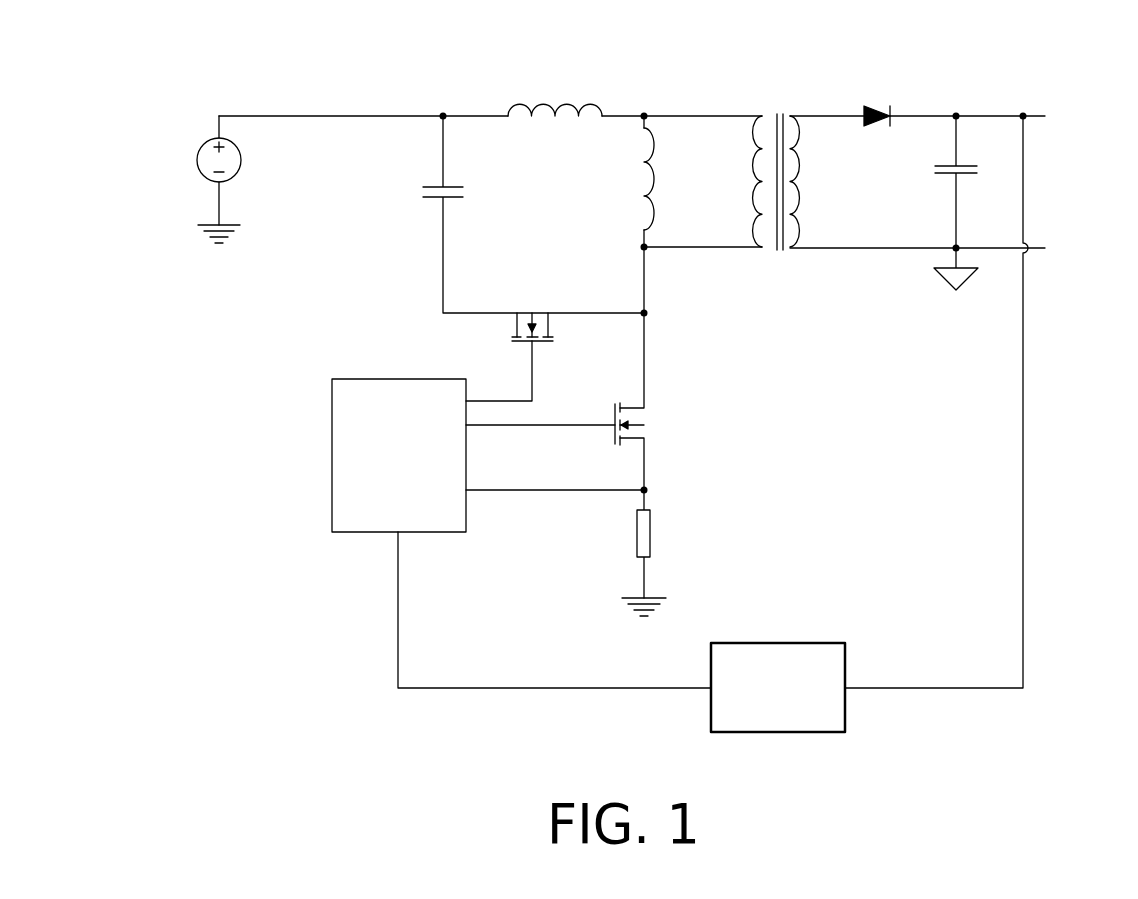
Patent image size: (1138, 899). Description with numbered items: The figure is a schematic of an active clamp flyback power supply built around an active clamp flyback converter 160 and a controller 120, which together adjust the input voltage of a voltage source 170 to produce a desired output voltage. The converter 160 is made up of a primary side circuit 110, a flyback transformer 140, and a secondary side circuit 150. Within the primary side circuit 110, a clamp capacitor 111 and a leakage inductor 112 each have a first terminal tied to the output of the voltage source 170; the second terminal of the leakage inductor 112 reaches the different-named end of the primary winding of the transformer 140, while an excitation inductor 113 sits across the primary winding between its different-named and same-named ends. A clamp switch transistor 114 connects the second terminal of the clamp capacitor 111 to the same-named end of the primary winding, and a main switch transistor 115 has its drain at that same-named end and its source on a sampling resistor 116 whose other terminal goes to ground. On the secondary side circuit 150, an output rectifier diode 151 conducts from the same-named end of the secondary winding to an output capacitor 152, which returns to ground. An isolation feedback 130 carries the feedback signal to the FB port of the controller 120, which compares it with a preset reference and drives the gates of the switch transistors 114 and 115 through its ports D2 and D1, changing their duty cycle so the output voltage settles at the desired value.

The primary side circuit 110 is at (466, 95).
The clamp capacitor 111 is at (432, 183).
The leakage inductor 112 is at (572, 98).
The excitation inductor 113 is at (640, 180).
The clamp switch transistor 114 is at (537, 305).
The main switch transistor 115 is at (632, 400).
The sampling resistor 116 is at (654, 505).
The controller 120 is at (372, 378).
The isolation feedback 130 is at (776, 643).
The flyback transformer 140 is at (782, 112).
The secondary side circuit 150 is at (947, 68).
The output rectifier diode 151 is at (888, 82).
The output capacitor 152 is at (952, 160).
The active clamp flyback converter 160 is at (341, 92).
The voltage source 170 is at (210, 136).